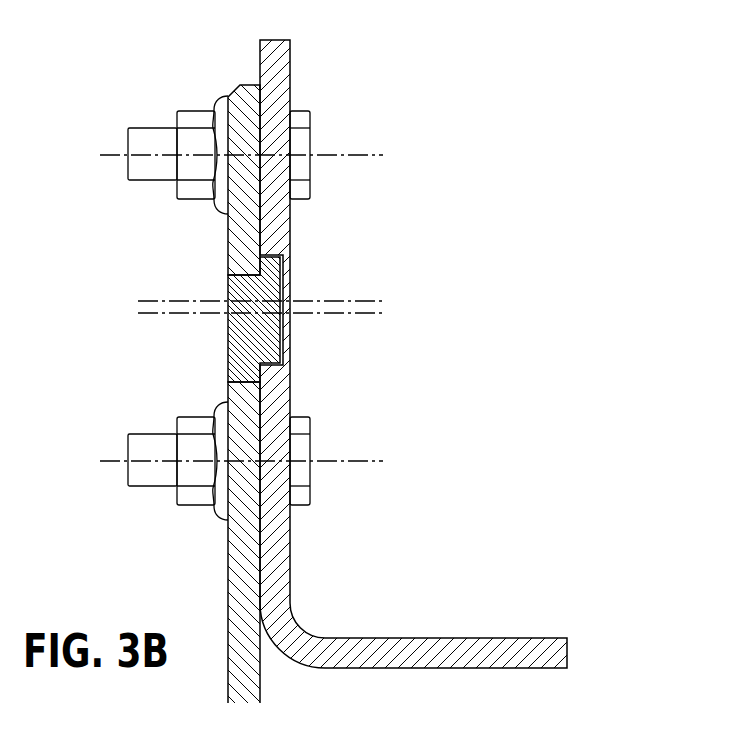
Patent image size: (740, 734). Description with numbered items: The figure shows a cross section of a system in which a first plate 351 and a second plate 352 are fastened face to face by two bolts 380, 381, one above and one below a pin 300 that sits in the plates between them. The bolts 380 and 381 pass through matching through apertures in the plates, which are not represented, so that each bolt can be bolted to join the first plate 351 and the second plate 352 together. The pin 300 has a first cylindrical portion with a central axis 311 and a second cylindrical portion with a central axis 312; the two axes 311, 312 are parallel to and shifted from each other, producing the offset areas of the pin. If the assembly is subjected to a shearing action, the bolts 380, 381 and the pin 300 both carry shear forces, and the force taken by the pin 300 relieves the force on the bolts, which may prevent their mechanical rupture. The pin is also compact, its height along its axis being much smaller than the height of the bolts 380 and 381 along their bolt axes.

The first plate 351 is at (284, 63).
The second plate 352 is at (215, 88).
The pin 300 is at (281, 342).
The bolt 380 is at (325, 142).
The bolt 381 is at (326, 479).
The central axis of the first cylindrical portion 311 is at (380, 291).
The central axis of the second cylindrical portion 312 is at (147, 324).